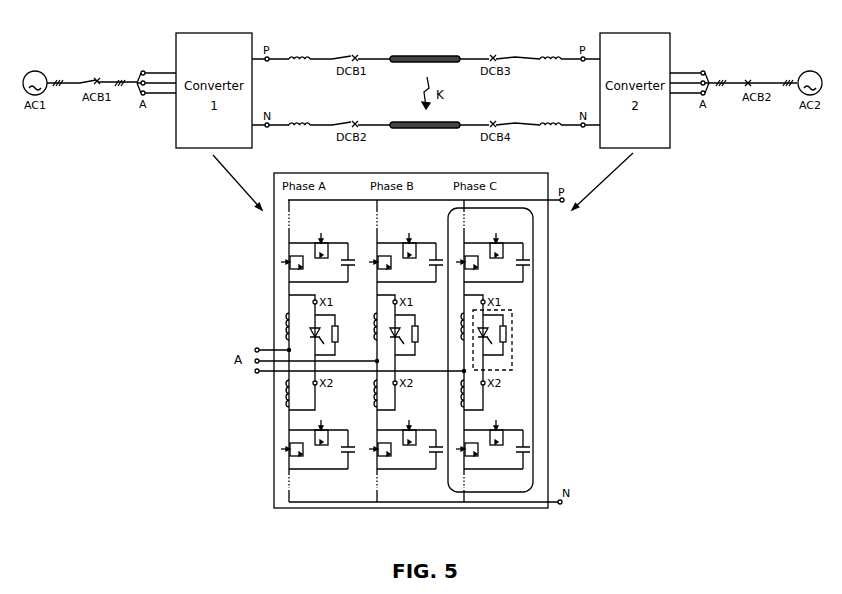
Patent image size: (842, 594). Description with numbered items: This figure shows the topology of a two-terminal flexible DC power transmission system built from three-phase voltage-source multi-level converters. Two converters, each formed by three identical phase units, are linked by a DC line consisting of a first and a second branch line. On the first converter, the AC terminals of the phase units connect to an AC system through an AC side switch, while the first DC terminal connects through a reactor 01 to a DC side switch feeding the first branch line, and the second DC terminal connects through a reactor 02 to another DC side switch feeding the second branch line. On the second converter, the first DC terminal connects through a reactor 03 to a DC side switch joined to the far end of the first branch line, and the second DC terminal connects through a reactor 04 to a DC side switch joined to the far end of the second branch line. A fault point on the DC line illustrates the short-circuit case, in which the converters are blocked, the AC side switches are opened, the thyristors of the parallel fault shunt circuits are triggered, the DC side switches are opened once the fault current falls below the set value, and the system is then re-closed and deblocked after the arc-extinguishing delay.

The reactor 01 is at (303, 45).
The reactor 02 is at (300, 110).
The reactor 03 is at (547, 49).
The reactor 04 is at (547, 114).